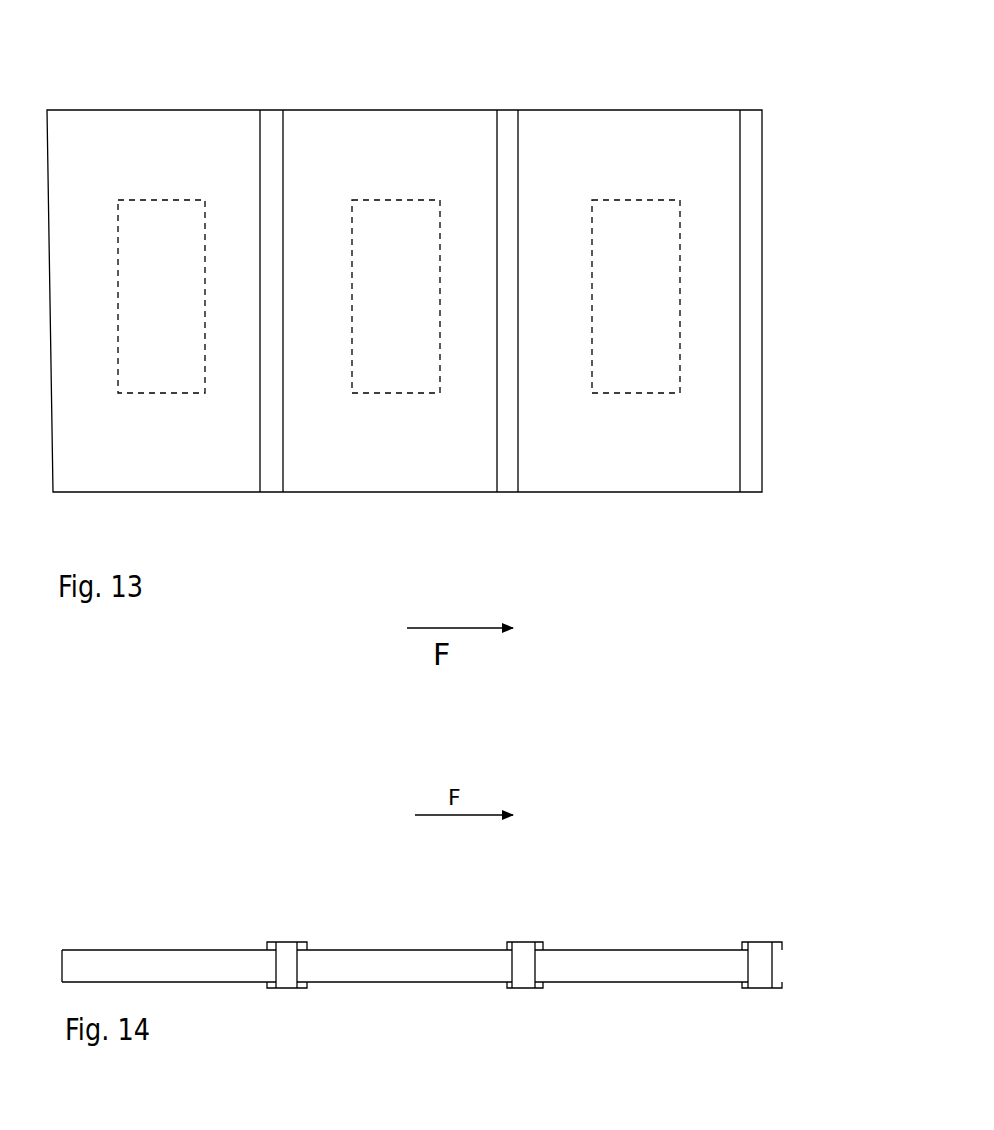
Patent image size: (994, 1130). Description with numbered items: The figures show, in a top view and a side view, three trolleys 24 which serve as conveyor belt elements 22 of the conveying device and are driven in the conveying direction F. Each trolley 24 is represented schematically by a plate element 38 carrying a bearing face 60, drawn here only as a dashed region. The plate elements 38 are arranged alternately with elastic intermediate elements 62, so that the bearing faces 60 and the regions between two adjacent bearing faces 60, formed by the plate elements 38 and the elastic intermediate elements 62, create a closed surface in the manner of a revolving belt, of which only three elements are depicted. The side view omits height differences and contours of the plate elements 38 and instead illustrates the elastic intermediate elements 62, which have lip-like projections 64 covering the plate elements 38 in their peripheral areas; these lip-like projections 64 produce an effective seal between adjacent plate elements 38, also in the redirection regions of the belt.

In FIG. 13, the conveyor belt element 22 is at (411, 298).
In FIG. 14, the conveyor belt element 22 is at (446, 959).
In FIG. 13, the trolley 24 is at (411, 298).
In FIG. 14, the trolley 24 is at (446, 959).
In FIG. 13, the plate element 38 is at (200, 473).
In FIG. 14, the plate element 38 is at (232, 972).
In FIG. 13, the bearing face 60 is at (158, 230).
In FIG. 14, the bearing face 60 is at (160, 945).
In FIG. 13, the elastic intermediate element 62 is at (278, 483).
In FIG. 14, the elastic intermediate element 62 is at (537, 996).
In FIG. 14, the lip-like projection 64 is at (268, 942).